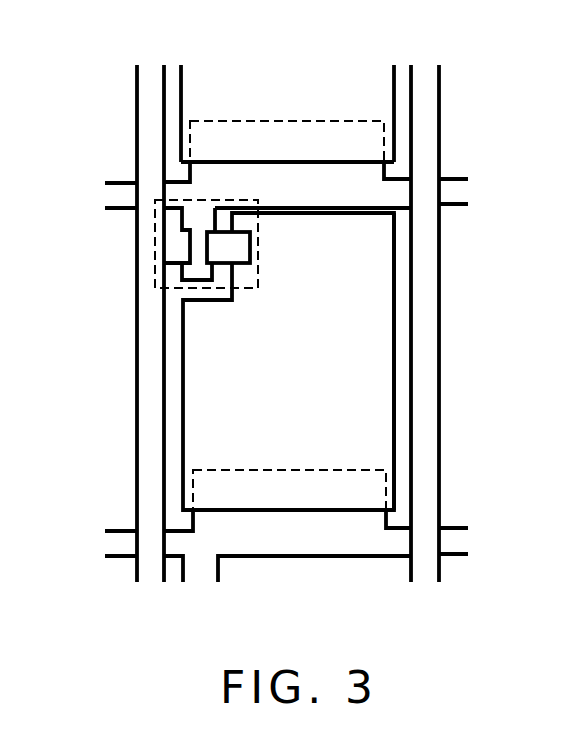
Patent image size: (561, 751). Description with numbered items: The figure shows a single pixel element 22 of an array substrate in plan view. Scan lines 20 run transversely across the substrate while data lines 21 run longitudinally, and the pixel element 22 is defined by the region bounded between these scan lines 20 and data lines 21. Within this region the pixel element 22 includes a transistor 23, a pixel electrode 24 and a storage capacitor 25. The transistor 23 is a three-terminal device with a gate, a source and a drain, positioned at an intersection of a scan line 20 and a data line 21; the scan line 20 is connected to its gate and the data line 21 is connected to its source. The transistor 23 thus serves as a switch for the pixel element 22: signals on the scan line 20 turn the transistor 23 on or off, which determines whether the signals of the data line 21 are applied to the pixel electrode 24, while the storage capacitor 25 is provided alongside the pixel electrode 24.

The scan line 20 is at (116, 196).
The data line 21 is at (150, 74).
The pixel element 22 is at (396, 243).
The transistor 23 is at (153, 260).
The pixel electrode 24 is at (300, 378).
The storage capacitor 25 is at (368, 487).